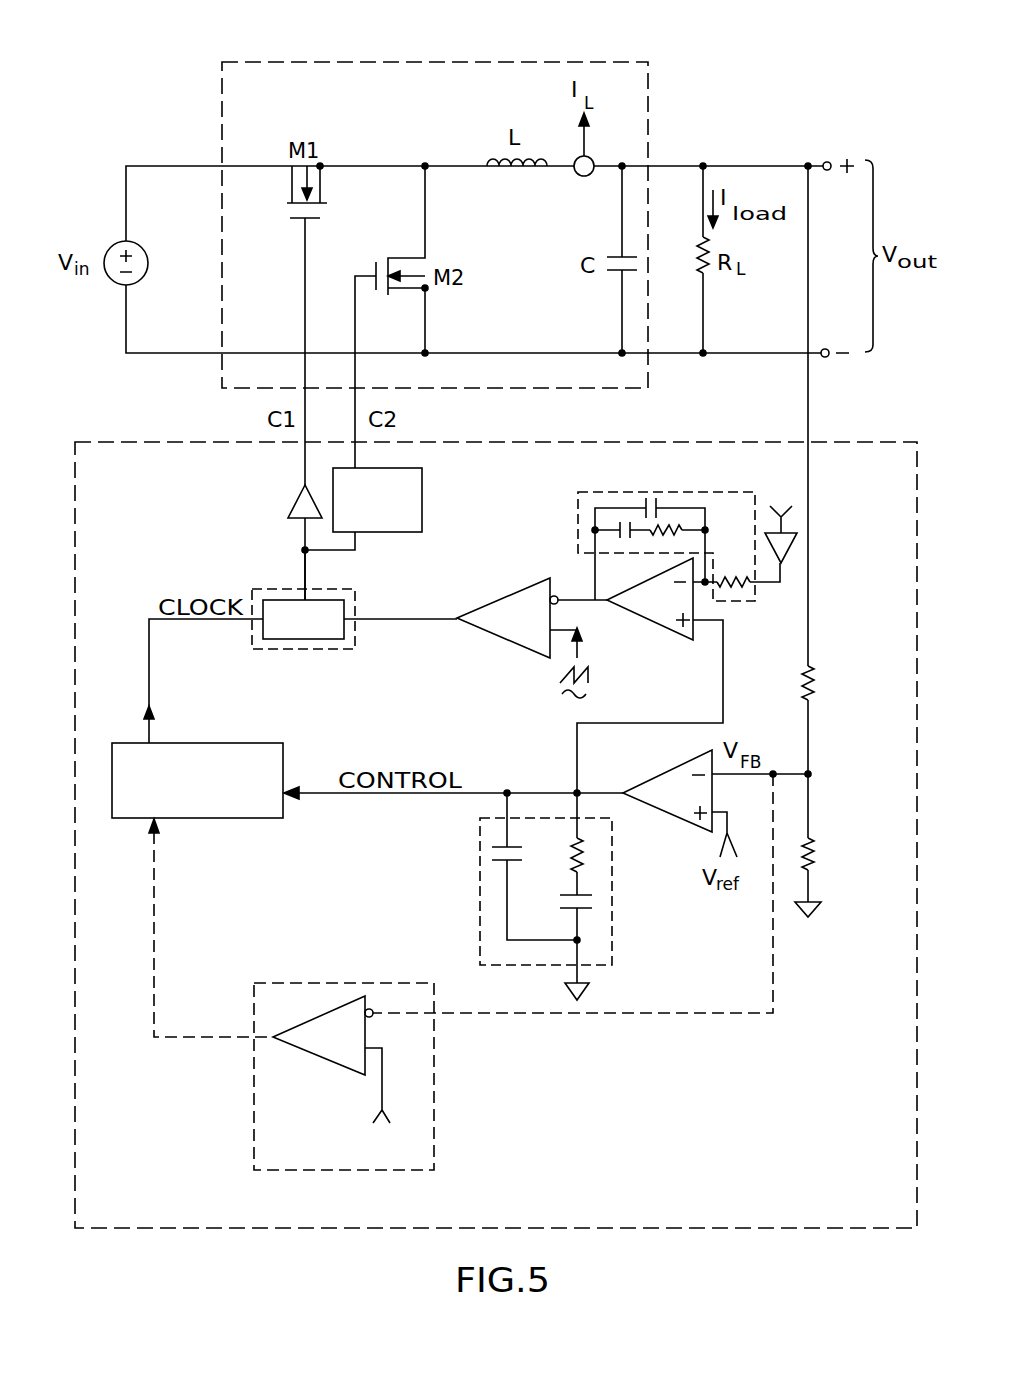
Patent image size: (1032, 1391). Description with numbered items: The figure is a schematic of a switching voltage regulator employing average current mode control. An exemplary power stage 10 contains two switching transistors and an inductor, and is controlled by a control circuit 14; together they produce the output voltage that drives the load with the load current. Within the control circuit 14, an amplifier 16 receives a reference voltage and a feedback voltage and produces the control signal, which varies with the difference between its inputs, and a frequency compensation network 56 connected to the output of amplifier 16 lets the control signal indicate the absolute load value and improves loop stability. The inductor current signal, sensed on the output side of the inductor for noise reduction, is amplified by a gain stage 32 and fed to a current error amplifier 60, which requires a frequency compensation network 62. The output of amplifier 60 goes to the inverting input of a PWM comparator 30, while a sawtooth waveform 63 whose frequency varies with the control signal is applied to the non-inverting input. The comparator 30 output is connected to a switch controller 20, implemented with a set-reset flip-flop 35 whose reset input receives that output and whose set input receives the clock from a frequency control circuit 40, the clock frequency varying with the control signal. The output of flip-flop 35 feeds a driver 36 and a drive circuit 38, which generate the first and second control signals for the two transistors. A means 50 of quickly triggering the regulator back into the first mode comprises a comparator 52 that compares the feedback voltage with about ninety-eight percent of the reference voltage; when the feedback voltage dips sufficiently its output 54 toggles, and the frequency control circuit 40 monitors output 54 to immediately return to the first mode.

The power stage 10 is at (288, 62).
The control circuit 14 is at (118, 442).
The amplifier 16 is at (668, 817).
The switch controller 20 is at (277, 590).
The PWM comparator 30 is at (513, 596).
The gain stage 32 is at (791, 553).
The set-reset flip-flop 35 is at (325, 598).
The driver 36 is at (294, 498).
The drive circuit 38 is at (422, 495).
The frequency control circuit 40 is at (252, 818).
The means of quickly triggering the regulator back into Mode I 50 is at (347, 982).
The comparator 52 is at (317, 1055).
The output of comparator 54 is at (153, 977).
The frequency compensation network 56 is at (480, 910).
The current error amplifier 60 is at (642, 620).
The frequency compensation network 62 is at (577, 537).
The sawtooth waveform 63 is at (580, 698).